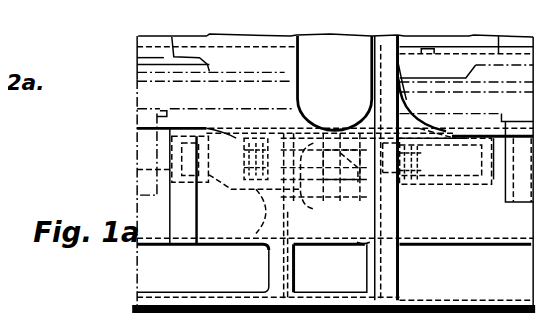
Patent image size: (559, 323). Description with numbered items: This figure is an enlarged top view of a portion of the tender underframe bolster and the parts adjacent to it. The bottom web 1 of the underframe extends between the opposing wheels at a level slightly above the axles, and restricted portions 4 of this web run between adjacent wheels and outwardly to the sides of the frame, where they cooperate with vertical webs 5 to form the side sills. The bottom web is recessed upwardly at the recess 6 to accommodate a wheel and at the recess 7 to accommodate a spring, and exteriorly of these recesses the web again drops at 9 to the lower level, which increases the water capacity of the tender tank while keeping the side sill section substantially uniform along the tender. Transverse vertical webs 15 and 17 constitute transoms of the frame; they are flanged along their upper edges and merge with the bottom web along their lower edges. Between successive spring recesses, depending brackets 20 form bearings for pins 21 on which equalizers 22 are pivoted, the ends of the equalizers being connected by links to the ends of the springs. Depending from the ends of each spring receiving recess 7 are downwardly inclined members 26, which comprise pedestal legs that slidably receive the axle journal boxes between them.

The bottom web 1 is at (288, 71).
The transverse vertical web 15 is at (372, 66).
The recess 6 is at (400, 52).
The downwardly inclined member 26 is at (232, 188).
The depending bracket 20 is at (305, 195).
The pin 21 is at (352, 192).
The equalizer 22 is at (362, 215).
The recess 7 is at (505, 206).
The vertical web 5 is at (218, 297).
The restricted portion 4 is at (327, 275).
The lower level portion of bottom web 9 is at (461, 272).
The transverse vertical web 17 is at (130, 310).